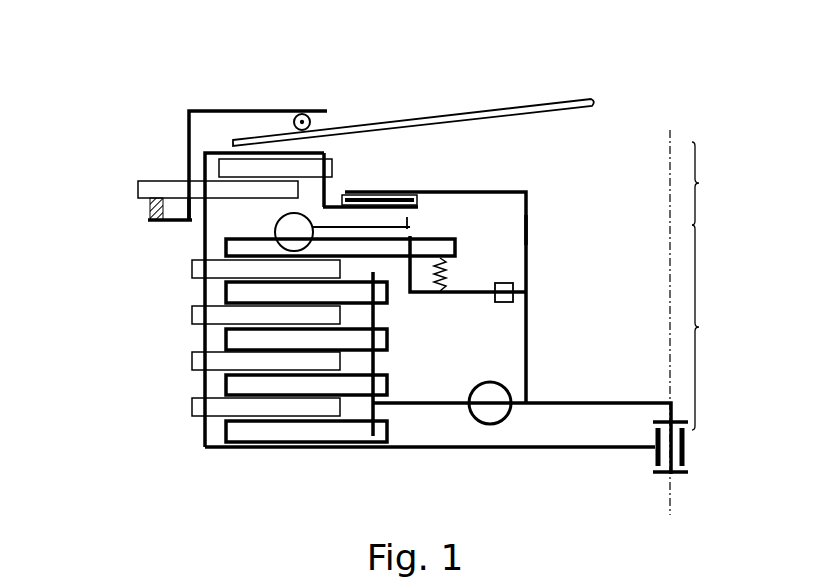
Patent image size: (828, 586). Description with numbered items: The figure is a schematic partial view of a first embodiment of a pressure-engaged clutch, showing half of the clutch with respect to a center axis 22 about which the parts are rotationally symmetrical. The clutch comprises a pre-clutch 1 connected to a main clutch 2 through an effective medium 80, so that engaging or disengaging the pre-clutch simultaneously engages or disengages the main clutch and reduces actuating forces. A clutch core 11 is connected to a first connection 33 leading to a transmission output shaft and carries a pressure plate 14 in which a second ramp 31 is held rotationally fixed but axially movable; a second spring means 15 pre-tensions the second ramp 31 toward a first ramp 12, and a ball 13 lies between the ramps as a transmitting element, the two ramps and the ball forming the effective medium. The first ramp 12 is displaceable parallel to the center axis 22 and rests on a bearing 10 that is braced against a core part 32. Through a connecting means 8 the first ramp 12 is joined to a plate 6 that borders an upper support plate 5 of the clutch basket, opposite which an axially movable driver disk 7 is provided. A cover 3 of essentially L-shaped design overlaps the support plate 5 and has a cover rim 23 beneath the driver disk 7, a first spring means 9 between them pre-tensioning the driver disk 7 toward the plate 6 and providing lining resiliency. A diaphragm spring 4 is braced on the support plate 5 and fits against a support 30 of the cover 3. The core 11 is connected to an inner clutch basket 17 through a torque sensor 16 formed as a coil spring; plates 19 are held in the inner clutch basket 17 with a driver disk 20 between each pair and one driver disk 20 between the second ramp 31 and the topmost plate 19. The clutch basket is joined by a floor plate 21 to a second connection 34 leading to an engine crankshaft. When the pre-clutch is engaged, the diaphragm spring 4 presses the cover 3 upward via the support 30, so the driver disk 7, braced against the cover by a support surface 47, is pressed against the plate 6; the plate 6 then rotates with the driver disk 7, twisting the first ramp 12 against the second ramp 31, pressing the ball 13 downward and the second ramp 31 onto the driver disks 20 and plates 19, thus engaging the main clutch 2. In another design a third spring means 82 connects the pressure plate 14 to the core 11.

The pre-clutch 1 is at (705, 183).
The main clutch 2 is at (709, 327).
The cover 3 is at (226, 110).
The diaphragm spring 4 is at (545, 100).
The support plate 5 is at (307, 152).
The plate 6 is at (330, 172).
The driver disk 7 is at (148, 186).
The connecting means 8 is at (330, 197).
The first spring means 9 is at (150, 210).
The bearing 10 is at (420, 196).
The clutch core 11 is at (598, 402).
The first ramp 12 is at (405, 219).
The ball 13 is at (291, 238).
The pressure plate 14 is at (530, 330).
The second spring means 15 is at (447, 276).
The torque sensor 16 is at (498, 421).
The inner clutch basket 17 is at (389, 386).
The plates 19 is at (389, 292).
The driver disk 20 is at (192, 314).
The floor plate 21 is at (272, 449).
The center axis 22 is at (672, 138).
The cover rim 23 is at (163, 222).
The support 30 is at (306, 114).
The second ramp 31 is at (452, 236).
The core part 32 is at (524, 138).
The first connection 33 is at (676, 474).
The second connection 34 is at (654, 457).
The support surface 47 is at (181, 198).
The effective medium 80 is at (530, 236).
The third spring means 82 is at (514, 291).